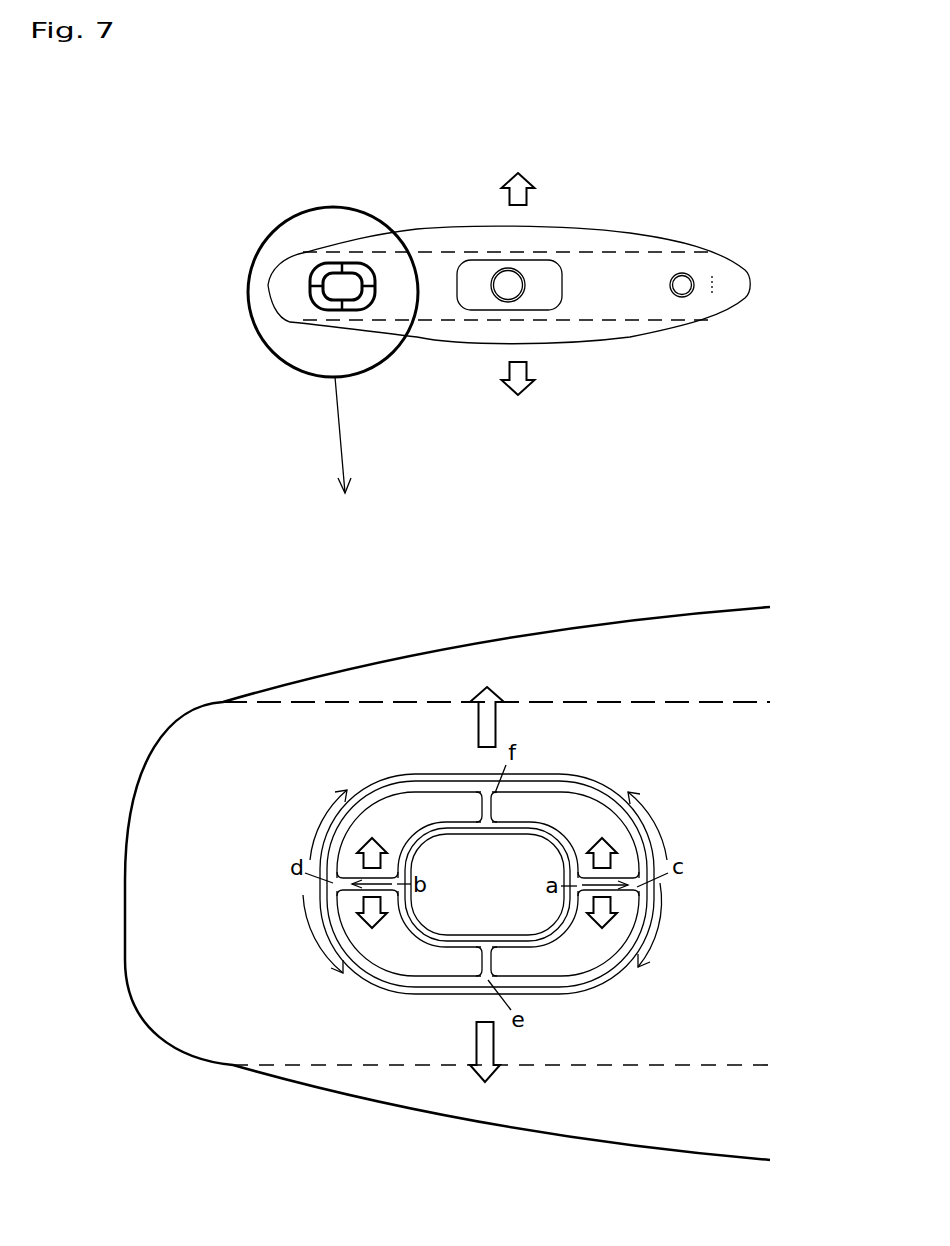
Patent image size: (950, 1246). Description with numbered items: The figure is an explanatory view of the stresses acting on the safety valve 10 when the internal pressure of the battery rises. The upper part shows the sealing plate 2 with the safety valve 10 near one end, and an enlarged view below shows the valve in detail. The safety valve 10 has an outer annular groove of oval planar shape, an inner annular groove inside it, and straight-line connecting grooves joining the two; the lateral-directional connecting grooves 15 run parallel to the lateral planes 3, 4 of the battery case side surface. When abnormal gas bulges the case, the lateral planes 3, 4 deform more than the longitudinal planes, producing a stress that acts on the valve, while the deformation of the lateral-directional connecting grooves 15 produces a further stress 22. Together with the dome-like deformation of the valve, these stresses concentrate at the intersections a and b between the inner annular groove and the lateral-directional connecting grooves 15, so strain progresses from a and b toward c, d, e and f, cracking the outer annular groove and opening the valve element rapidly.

The sealing plate 2 is at (617, 270).
The lateral plane 3 is at (562, 345).
The lateral plane 4 is at (562, 227).
The safety valve 10 is at (345, 268).
The lateral-directional connecting groove 15 is at (342, 890).
The stress 22 is at (488, 884).